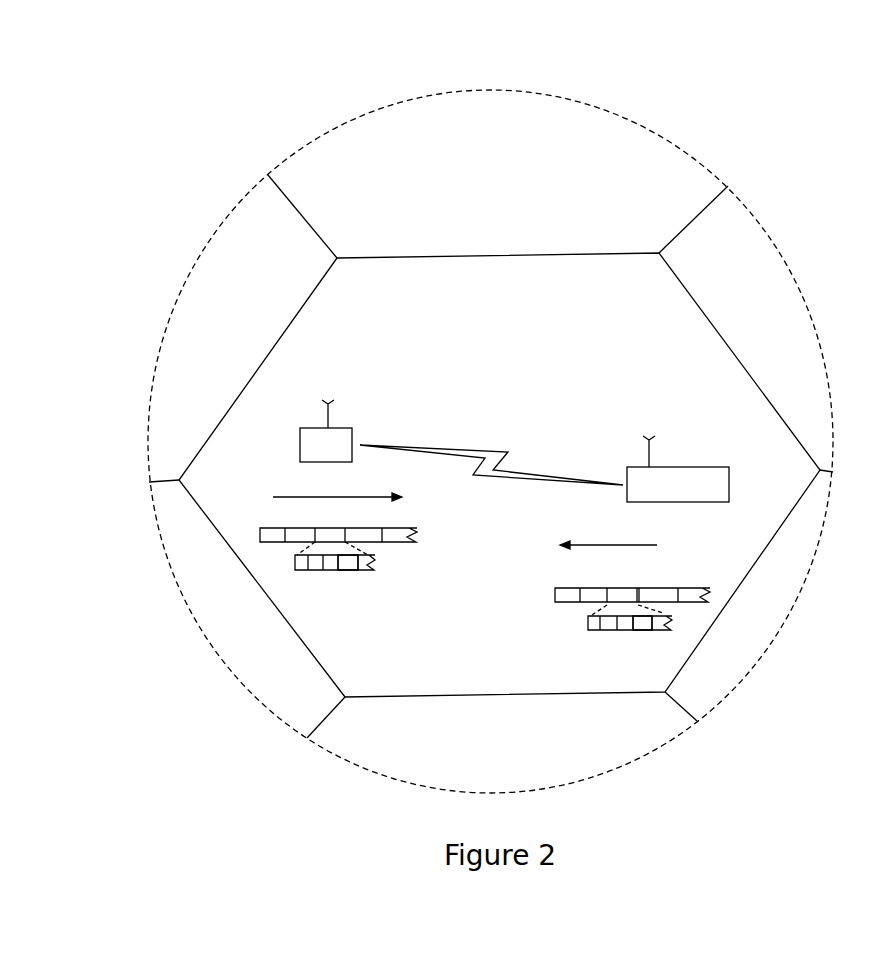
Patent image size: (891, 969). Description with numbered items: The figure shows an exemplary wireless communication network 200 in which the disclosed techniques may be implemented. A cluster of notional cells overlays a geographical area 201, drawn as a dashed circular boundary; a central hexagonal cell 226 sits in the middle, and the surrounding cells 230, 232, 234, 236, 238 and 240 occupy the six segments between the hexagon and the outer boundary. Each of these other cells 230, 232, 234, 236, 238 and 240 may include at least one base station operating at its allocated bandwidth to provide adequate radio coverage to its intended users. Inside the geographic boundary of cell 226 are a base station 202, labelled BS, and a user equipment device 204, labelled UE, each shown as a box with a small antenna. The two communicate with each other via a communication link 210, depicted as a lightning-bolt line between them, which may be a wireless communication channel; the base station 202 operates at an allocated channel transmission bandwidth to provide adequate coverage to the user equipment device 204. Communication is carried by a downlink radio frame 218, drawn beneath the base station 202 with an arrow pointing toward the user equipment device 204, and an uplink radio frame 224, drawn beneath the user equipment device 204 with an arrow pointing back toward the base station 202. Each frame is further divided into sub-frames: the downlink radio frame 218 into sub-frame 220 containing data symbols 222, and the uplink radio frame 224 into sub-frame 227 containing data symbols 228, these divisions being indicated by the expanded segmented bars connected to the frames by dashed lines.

The wireless communication network 200 is at (441, 62).
The geographical area 201 is at (623, 110).
The base station 202 is at (300, 437).
The user equipment device 204 is at (702, 463).
The communication link 210 is at (487, 445).
The downlink radio frame 218 is at (258, 535).
The sub-frame 220 is at (295, 557).
The data symbols 222 is at (345, 560).
The uplink radio frame 224 is at (682, 583).
The cell 226 is at (373, 303).
The sub-frame 227 is at (588, 625).
The data symbols 228 is at (640, 627).
The cell 230 is at (230, 228).
The cell 232 is at (352, 134).
The cell 234 is at (747, 246).
The cell 236 is at (723, 677).
The cell 238 is at (388, 750).
The cell 240 is at (235, 652).